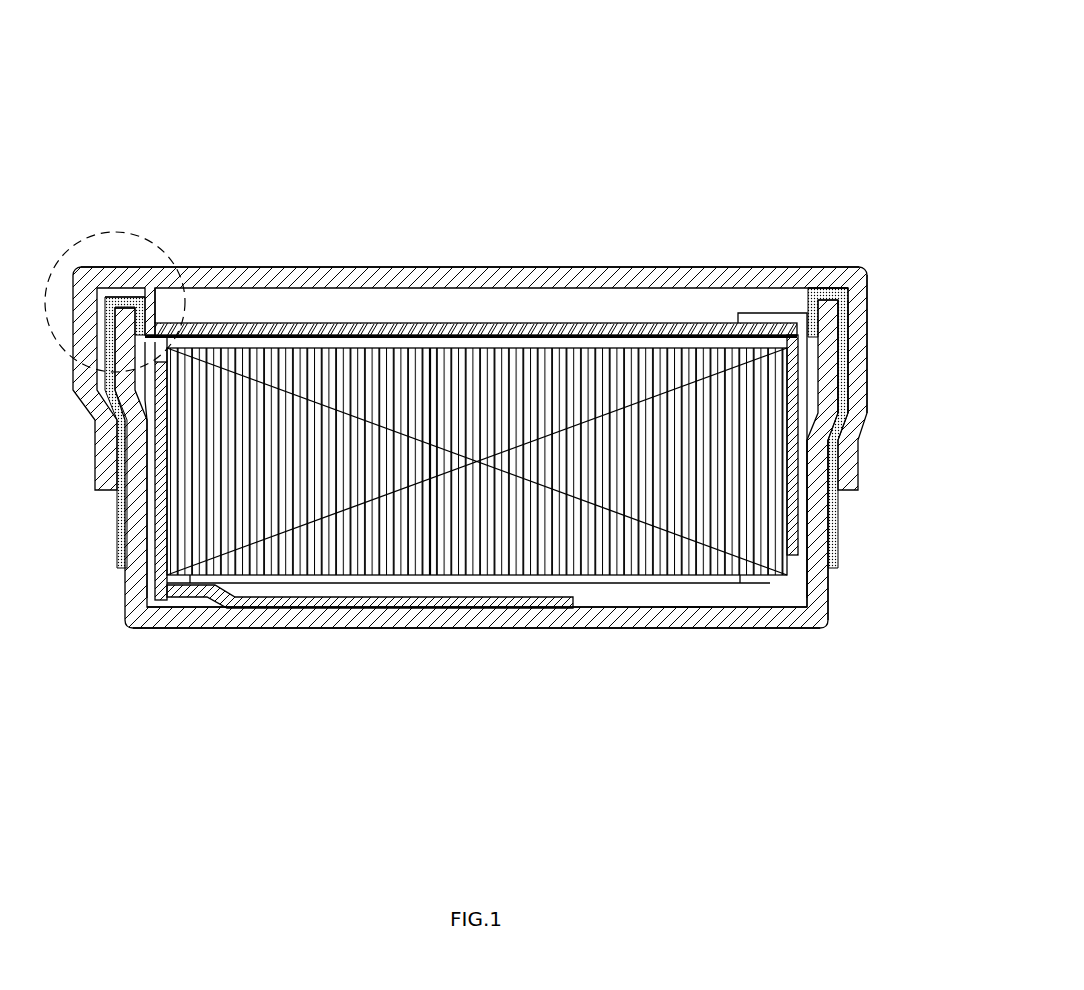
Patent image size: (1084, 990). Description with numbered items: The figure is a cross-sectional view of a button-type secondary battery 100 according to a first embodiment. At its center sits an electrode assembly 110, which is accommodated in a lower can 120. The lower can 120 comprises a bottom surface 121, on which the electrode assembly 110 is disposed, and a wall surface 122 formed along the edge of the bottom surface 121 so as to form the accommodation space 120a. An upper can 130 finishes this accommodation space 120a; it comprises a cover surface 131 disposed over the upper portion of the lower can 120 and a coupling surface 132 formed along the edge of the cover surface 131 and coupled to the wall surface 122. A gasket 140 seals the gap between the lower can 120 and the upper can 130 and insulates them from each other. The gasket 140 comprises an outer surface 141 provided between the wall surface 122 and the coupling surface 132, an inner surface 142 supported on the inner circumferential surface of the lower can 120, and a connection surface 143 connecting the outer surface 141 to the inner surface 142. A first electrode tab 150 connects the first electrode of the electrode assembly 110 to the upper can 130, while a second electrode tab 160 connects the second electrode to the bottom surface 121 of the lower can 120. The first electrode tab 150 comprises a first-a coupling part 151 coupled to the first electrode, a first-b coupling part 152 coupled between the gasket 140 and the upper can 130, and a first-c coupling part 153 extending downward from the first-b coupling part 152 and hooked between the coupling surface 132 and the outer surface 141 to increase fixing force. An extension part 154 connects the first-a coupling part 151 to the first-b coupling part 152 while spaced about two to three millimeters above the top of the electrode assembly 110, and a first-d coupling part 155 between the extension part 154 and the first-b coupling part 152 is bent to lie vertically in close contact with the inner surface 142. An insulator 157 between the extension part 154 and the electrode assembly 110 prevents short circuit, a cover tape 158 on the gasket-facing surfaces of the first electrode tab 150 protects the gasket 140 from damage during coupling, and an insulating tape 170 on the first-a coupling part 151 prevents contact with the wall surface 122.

The button-type secondary battery 100 is at (152, 138).
The electrode assembly 110 is at (614, 560).
The lower can 120 is at (485, 519).
The accommodation space 120a is at (690, 597).
The bottom surface 121 is at (768, 630).
The wall surface 122 is at (822, 605).
The upper can 130 is at (485, 324).
The cover surface 131 is at (812, 267).
The coupling surface 132 is at (872, 300).
The gasket 140 is at (887, 350).
The outer surface 141 is at (920, 320).
The inner surface 142 is at (818, 338).
The connection surface 143 is at (830, 298).
The first electrode tab 150 is at (458, 304).
The first-a coupling part 151 is at (787, 415).
The first-b coupling part 152 is at (125, 295).
The first-c coupling part 153 is at (100, 270).
The extension part 154 is at (295, 298).
The first-d coupling part 155 is at (137, 303).
The insulator 157 is at (422, 298).
The cover tape 158 is at (490, 298).
The second electrode tab 160 is at (397, 606).
The insulating tape 170 is at (150, 512).